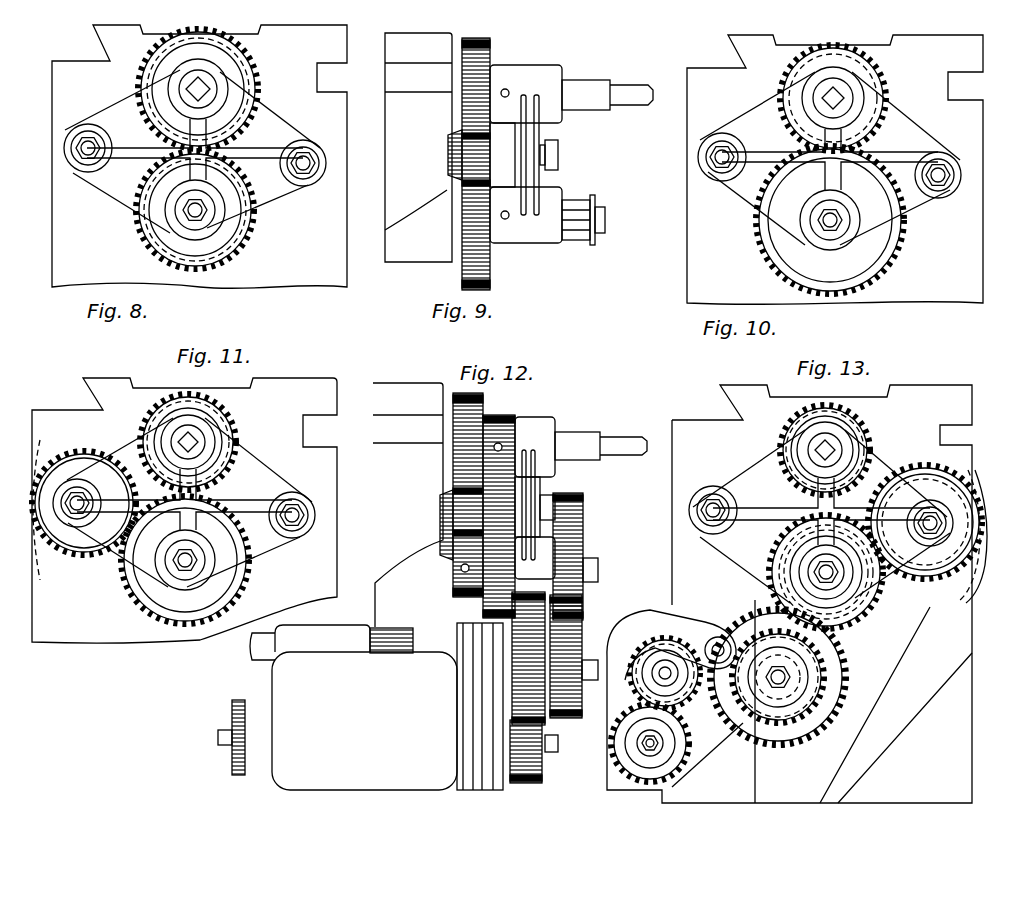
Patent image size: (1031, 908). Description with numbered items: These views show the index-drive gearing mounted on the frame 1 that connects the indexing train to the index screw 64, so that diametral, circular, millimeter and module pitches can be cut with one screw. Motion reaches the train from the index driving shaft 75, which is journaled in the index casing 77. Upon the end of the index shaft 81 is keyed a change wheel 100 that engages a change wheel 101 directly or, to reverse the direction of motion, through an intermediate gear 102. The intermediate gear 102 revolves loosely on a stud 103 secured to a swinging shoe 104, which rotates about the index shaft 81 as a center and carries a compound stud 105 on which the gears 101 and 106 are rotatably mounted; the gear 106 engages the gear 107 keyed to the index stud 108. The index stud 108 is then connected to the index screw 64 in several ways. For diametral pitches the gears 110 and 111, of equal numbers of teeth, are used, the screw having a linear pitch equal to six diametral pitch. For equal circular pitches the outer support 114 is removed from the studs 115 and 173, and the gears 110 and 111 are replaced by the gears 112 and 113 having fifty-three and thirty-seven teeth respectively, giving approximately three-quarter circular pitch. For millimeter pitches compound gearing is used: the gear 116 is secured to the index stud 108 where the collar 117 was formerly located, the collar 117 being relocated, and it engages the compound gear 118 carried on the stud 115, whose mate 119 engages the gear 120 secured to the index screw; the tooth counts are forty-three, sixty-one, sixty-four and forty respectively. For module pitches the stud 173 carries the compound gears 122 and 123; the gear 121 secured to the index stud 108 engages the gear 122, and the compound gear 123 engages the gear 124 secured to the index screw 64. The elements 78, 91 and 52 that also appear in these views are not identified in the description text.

In FIG. 8, the frame 1 is at (52, 238).
In FIG. 9, the frame 1 is at (397, 163).
In FIG. 10, the frame 1 is at (687, 253).
In FIG. 11, the frame 1 is at (32, 622).
In FIG. 12, the frame 1 is at (374, 563).
In FIG. 13, the frame 1 is at (676, 485).
In FIG. 13, the cover dashed outline 52 is at (982, 470).
In FIG. 8, the index screw 64 is at (205, 95).
In FIG. 9, the index screw 64 is at (588, 82).
In FIG. 10, the index screw 64 is at (842, 100).
In FIG. 11, the index screw 64 is at (205, 440).
In FIG. 12, the index screw 64 is at (575, 433).
In FIG. 13, the index screw 64 is at (815, 462).
In FIG. 12, the index driving shaft 75 is at (265, 657).
In FIG. 12, the index casing 77 is at (435, 790).
In FIG. 12, the motor pinion 78 is at (393, 630).
In FIG. 12, the index shaft 81 is at (553, 745).
In FIG. 13, the index shaft 81 is at (663, 743).
In FIG. 12, the small gear 91 is at (235, 704).
In FIG. 12, the change wheel 100 is at (527, 782).
In FIG. 13, the change wheel 100 is at (665, 775).
In FIG. 12, the change wheel 101 is at (522, 602).
In FIG. 13, the change wheel 101 is at (780, 752).
In FIG. 13, the intermediate gear 102 is at (690, 703).
In FIG. 13, the stud 103 is at (632, 690).
In FIG. 12, the swinging shoe 104 is at (482, 780).
In FIG. 13, the swinging shoe 104 is at (705, 752).
In FIG. 12, the compound stud 105 is at (592, 662).
In FIG. 13, the compound stud 105 is at (790, 677).
In FIG. 12, the gear 106 is at (562, 712).
In FIG. 13, the gear 106 is at (800, 715).
In FIG. 12, the gear 107 is at (572, 510).
In FIG. 13, the gear 107 is at (862, 628).
In FIG. 8, the index stud 108 is at (197, 215).
In FIG. 9, the index stud 108 is at (605, 220).
In FIG. 10, the index stud 108 is at (828, 226).
In FIG. 11, the index stud 108 is at (185, 565).
In FIG. 12, the index stud 108 is at (598, 570).
In FIG. 13, the index stud 108 is at (826, 580).
In FIG. 8, the gear 110 is at (150, 253).
In FIG. 8, the gear 111 is at (137, 75).
In FIG. 10, the gear 112 is at (795, 282).
In FIG. 10, the gear 113 is at (870, 132).
In FIG. 8, the outer support 114 is at (273, 195).
In FIG. 9, the outer support 114 is at (540, 65).
In FIG. 10, the outer support 114 is at (925, 205).
In FIG. 11, the outer support 114 is at (258, 550).
In FIG. 12, the outer support 114 is at (528, 418).
In FIG. 13, the outer support 114 is at (755, 470).
In FIG. 8, the stud 115 is at (92, 143).
In FIG. 10, the stud 115 is at (728, 153).
In FIG. 11, the stud 115 is at (75, 503).
In FIG. 13, the stud 115 is at (718, 508).
In FIG. 11, the gear 116 is at (240, 590).
In FIG. 9, the collar 117 is at (500, 240).
In FIG. 12, the collar 117 is at (440, 577).
In FIG. 11, the compound gear 118 is at (80, 565).
In FIG. 11, the compound gear 119 is at (40, 573).
In FIG. 11, the gear 120 is at (228, 470).
In FIG. 13, the gear 121 is at (872, 614).
In FIG. 13, the compound gear 122 is at (952, 468).
In FIG. 13, the compound gear 123 is at (972, 606).
In FIG. 13, the gear 124 is at (866, 428).
In FIG. 8, the stud 173 is at (305, 167).
In FIG. 10, the stud 173 is at (950, 175).
In FIG. 11, the stud 173 is at (297, 520).
In FIG. 13, the stud 173 is at (931, 532).